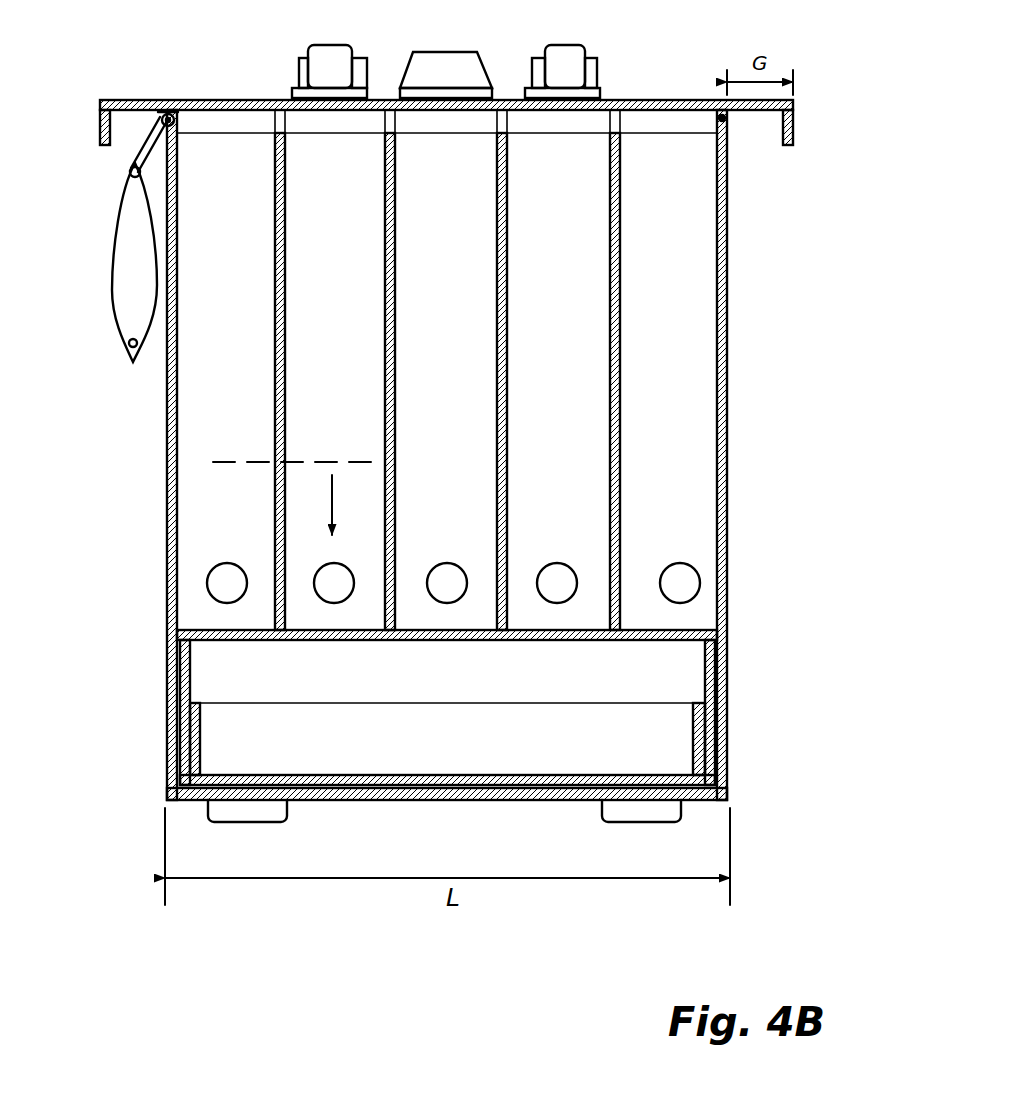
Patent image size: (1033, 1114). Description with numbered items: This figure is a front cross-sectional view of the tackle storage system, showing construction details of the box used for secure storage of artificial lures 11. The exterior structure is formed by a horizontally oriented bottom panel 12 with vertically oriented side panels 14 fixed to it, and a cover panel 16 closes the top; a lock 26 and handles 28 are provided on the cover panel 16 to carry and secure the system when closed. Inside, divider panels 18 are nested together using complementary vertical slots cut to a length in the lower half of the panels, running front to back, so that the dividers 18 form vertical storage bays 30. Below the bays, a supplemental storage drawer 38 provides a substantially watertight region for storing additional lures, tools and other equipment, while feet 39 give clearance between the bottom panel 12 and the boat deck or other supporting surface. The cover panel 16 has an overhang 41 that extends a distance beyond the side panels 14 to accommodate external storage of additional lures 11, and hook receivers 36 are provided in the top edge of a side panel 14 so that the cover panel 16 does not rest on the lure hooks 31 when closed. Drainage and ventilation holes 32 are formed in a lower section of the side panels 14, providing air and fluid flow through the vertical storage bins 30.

The artificial lures 11 is at (112, 305).
The bottom panel 12 is at (432, 800).
The side panels 14 is at (167, 445).
The cover panel 16 is at (632, 98).
The divider panels 18 is at (397, 383).
The lock 26 is at (425, 62).
The handle 28 is at (328, 58).
The vertical storage bays 30 is at (353, 296).
The hooks 31 is at (148, 133).
The drainage and ventilation holes 32 is at (207, 583).
The hook receivers 36 is at (176, 122).
The storage drawer 38 is at (228, 741).
The feet 39 is at (268, 810).
The overhang 41 is at (94, 98).